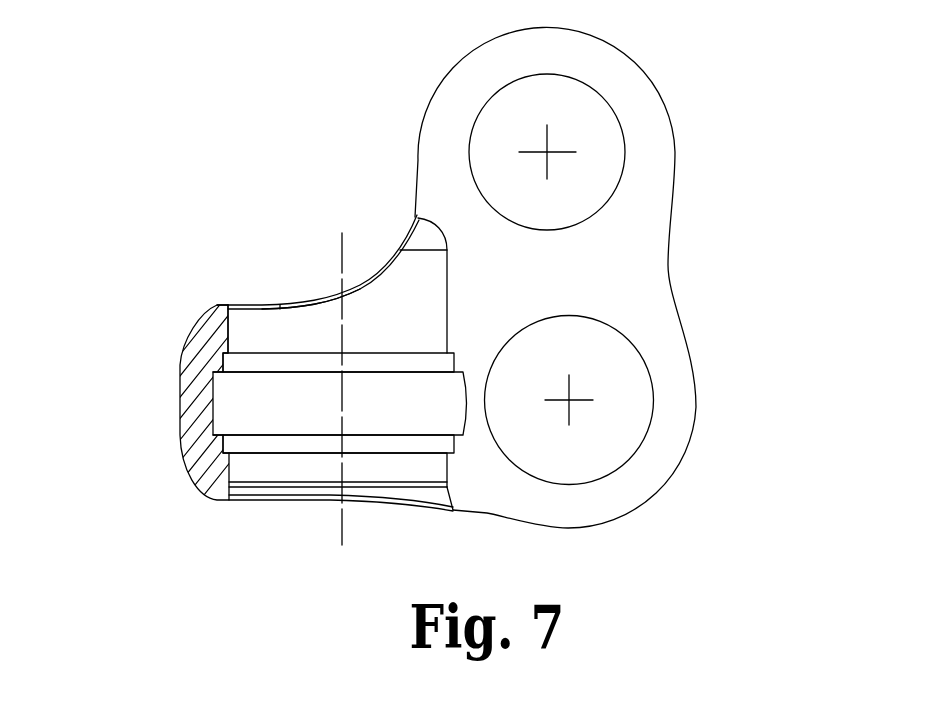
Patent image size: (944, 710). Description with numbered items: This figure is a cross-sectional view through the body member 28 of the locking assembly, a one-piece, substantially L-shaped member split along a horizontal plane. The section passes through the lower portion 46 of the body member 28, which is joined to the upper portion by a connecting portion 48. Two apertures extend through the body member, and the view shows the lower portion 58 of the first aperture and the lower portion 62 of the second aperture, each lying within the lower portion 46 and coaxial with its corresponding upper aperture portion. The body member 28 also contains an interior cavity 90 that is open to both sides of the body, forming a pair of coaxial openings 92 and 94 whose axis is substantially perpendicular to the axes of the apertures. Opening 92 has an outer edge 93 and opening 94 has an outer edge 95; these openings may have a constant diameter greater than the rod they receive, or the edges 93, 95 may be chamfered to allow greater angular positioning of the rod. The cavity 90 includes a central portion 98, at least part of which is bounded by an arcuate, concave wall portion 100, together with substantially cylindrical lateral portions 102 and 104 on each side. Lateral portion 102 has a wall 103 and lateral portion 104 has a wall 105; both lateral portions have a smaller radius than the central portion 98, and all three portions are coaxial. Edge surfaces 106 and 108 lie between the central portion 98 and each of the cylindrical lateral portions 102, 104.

The body member 28 is at (270, 113).
The lower portion 46 is at (678, 318).
The connecting portion 48 is at (181, 360).
The lower portion of first aperture 58 is at (473, 128).
The lower portion of second aperture 62 is at (645, 438).
The interior cavity 90 is at (366, 526).
The opening 92 is at (255, 500).
The outer edge 93 is at (228, 497).
The opening 94 is at (300, 305).
The outer edge 95 is at (228, 305).
The central portion 98 is at (382, 395).
The arcuate wall portion 100 is at (485, 395).
The lateral portion 102 is at (390, 272).
The wall 103 is at (250, 312).
The lateral portion 104 is at (447, 462).
The wall 105 is at (230, 472).
The edge surface 106 is at (255, 455).
The edge surface 108 is at (266, 362).